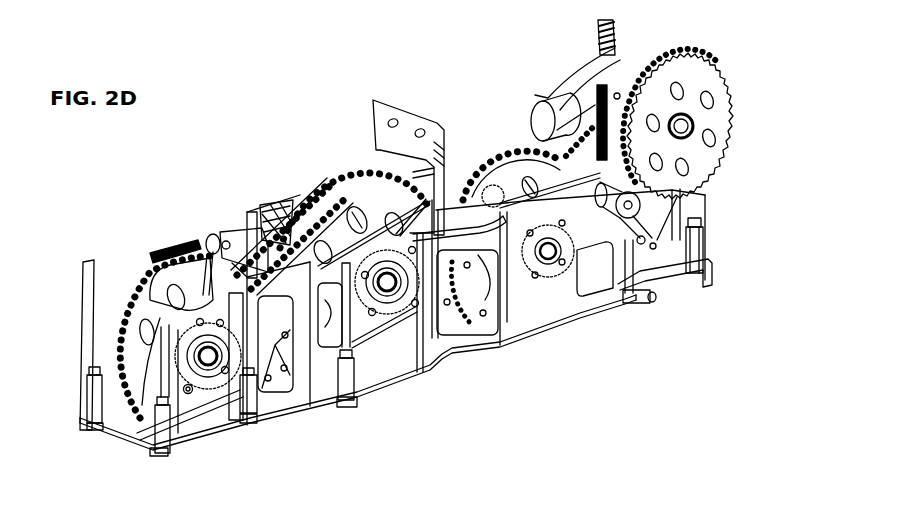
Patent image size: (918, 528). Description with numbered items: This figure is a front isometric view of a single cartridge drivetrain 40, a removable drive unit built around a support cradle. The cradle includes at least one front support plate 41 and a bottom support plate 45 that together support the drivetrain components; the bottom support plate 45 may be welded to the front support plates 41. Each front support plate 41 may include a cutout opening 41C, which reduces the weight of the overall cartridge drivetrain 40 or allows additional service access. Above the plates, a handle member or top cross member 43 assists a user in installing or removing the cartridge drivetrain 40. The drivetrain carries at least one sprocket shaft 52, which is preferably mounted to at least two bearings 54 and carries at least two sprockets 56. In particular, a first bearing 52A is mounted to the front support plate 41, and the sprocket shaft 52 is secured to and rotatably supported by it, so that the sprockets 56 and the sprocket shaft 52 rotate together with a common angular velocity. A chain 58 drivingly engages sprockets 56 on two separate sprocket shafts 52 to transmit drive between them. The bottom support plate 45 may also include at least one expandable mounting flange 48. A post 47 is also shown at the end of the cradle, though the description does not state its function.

The cartridge drivetrain 40 is at (328, 108).
The front support plate 41 is at (208, 418).
The cutout opening 41C is at (596, 273).
The top cross member 43 is at (405, 115).
The bottom support plate 45 is at (499, 356).
The support post cylinder 47 is at (699, 224).
The expandable mounting flange 48 is at (702, 281).
The sprocket shaft 52 is at (213, 358).
The first bearing 52A is at (208, 356).
The bearing 54 is at (192, 392).
The sprocket 56 is at (155, 305).
The chain 58 is at (178, 248).